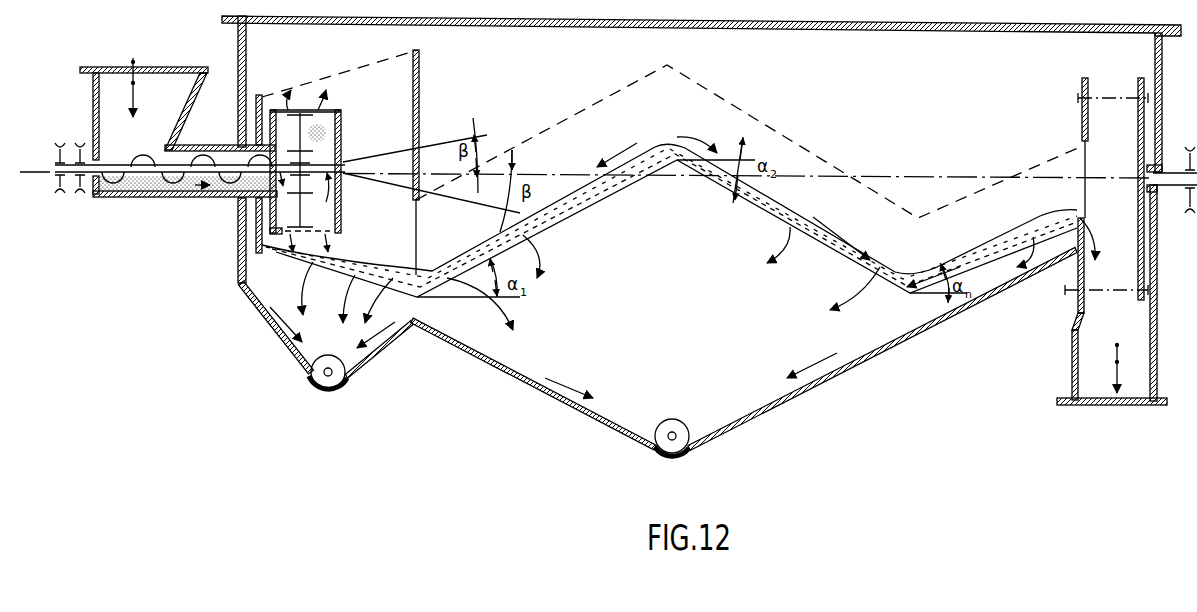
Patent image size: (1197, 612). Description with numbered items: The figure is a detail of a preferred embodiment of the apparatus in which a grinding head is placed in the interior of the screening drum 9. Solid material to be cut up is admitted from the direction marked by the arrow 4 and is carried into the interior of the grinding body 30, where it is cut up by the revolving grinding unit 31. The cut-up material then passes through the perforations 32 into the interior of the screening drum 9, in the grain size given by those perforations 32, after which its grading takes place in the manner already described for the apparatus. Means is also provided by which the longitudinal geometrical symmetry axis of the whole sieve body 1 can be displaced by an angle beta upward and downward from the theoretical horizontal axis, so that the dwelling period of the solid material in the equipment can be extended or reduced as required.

The sieve body 1 is at (519, 117).
The arrow (direction of admitted solid material) 4 is at (133, 58).
The screening drum 9 is at (358, 60).
The grinding body 30 is at (285, 135).
The revolving grinding unit 31 is at (303, 207).
The perforations 32 is at (296, 110).